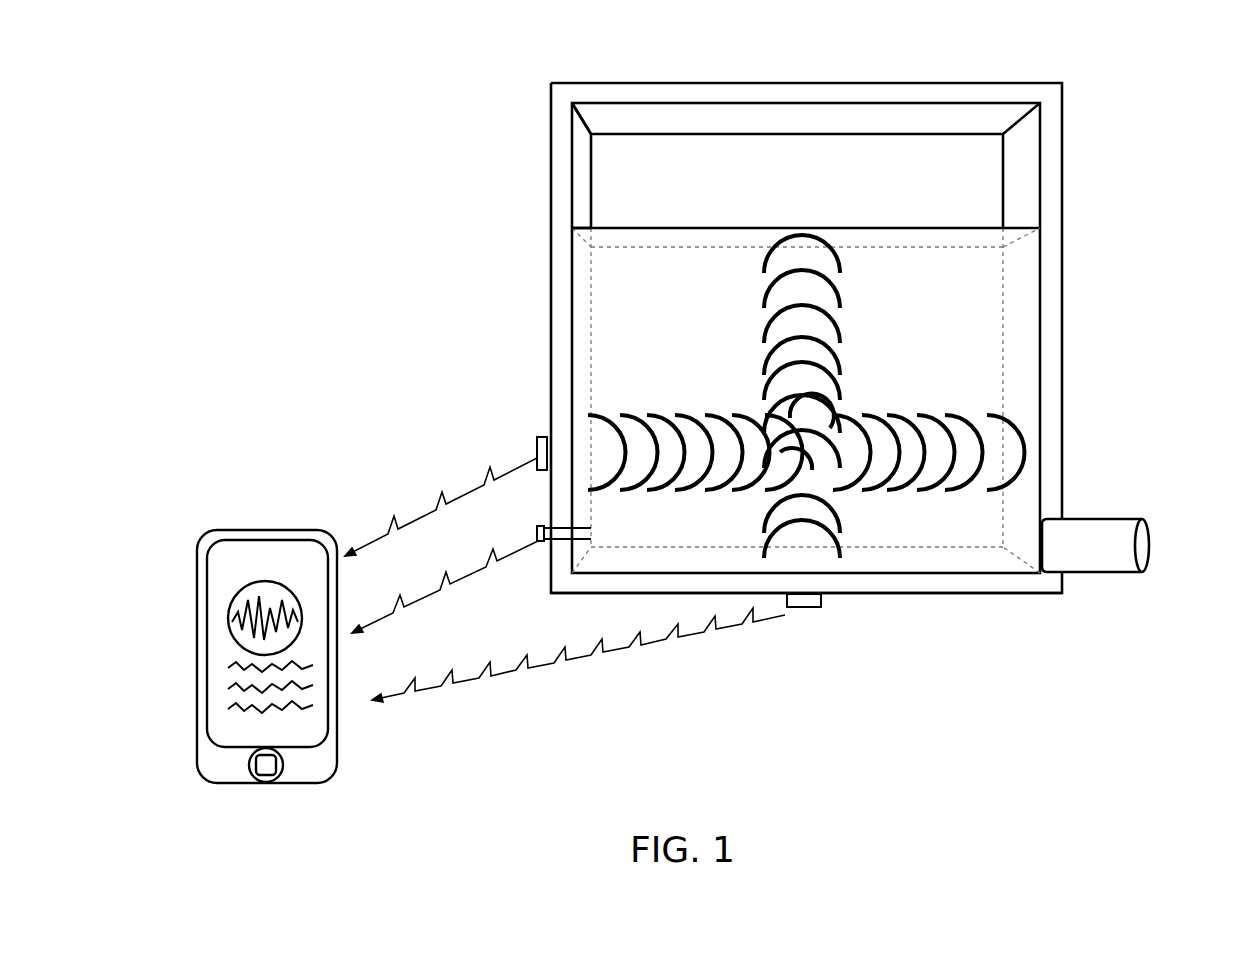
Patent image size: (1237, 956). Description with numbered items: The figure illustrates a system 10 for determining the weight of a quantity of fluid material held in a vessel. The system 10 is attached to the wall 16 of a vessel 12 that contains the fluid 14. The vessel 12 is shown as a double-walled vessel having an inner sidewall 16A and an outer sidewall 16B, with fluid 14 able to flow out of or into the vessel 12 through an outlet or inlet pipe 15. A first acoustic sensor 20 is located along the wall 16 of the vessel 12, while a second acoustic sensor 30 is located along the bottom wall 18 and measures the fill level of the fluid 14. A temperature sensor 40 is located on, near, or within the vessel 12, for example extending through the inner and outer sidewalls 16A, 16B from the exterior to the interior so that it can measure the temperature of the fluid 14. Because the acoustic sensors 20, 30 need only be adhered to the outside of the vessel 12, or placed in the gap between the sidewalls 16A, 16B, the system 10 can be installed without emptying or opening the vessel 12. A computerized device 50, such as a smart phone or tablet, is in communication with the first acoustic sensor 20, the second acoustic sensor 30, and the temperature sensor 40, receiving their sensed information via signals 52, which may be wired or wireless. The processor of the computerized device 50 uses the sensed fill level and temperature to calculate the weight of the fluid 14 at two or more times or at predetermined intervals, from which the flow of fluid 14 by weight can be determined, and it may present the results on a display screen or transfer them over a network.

The system 10 is at (258, 202).
The vessel 12 is at (1055, 173).
The fluid 14 is at (972, 350).
The outlet or inlet pipe 15 is at (1118, 545).
The wall 16 is at (553, 317).
The inner sidewall 16A is at (578, 202).
The outer sidewall 16B is at (548, 222).
The bottom wall 18 is at (930, 594).
The first acoustic sensor 20 is at (535, 452).
The second acoustic sensor 30 is at (812, 607).
The temperature sensor 40 is at (535, 532).
The computerized device 50 is at (205, 536).
The signals 52 is at (412, 507).